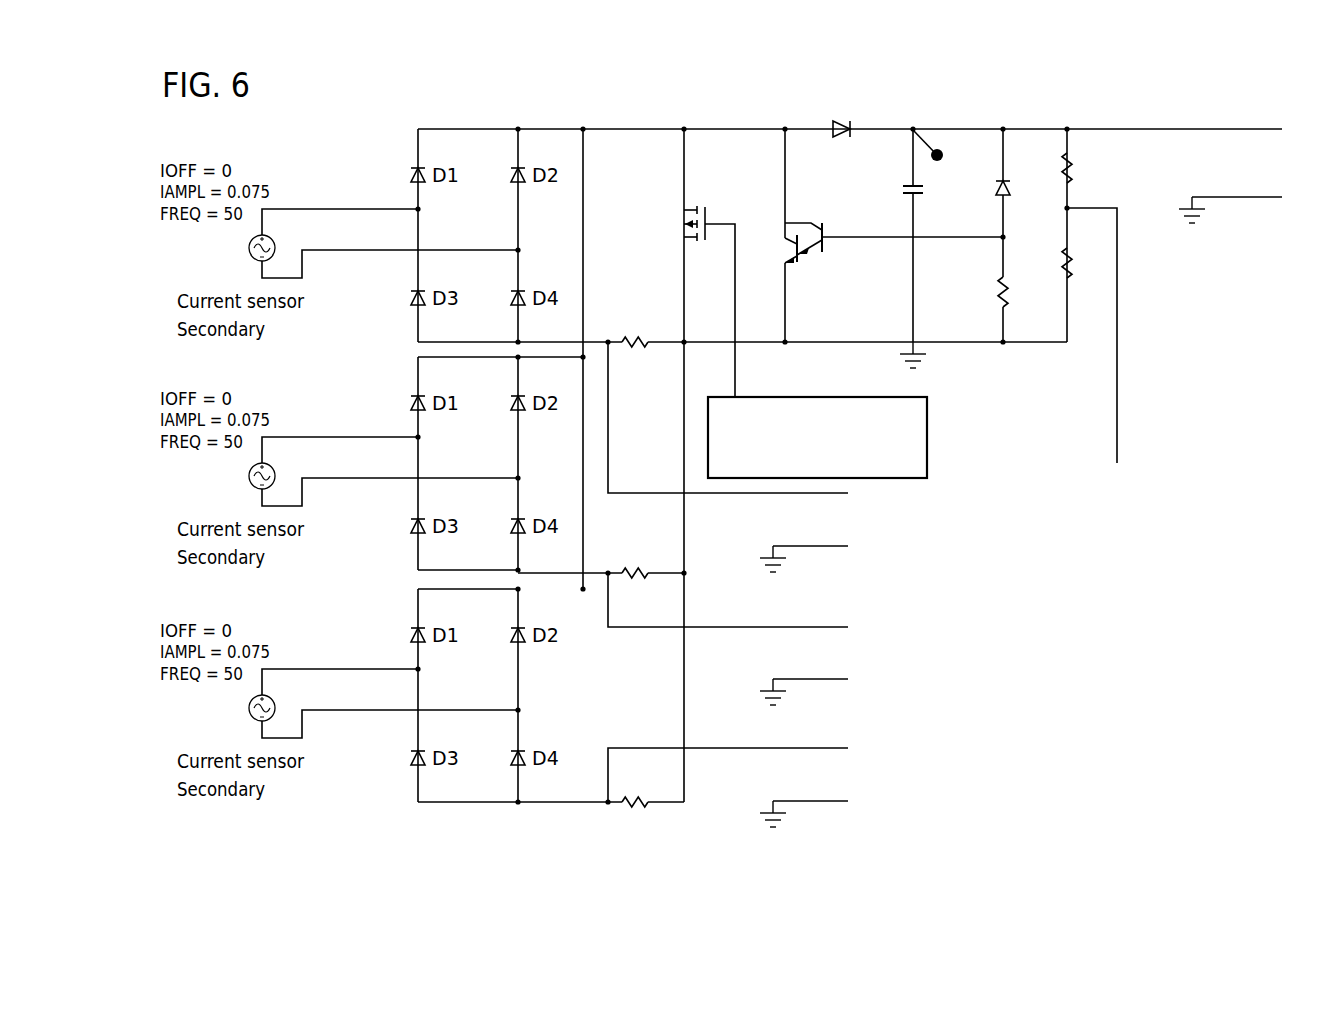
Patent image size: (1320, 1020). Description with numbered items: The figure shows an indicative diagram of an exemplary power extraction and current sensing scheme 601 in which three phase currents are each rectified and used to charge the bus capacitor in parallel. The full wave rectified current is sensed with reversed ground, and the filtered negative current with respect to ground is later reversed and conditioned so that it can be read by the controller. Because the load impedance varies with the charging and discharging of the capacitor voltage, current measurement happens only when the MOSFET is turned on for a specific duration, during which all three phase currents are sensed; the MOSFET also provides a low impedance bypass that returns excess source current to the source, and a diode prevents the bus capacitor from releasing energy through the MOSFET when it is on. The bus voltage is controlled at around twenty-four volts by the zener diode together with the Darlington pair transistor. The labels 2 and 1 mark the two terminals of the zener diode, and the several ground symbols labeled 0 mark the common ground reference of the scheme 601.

The power extraction and current sensing scheme 601 is at (442, 106).
The ground reference node 0 is at (1021, 526).
The diode D5 anode pin 1 is at (996, 236).
The diode D5 cathode pin 2 is at (996, 155).